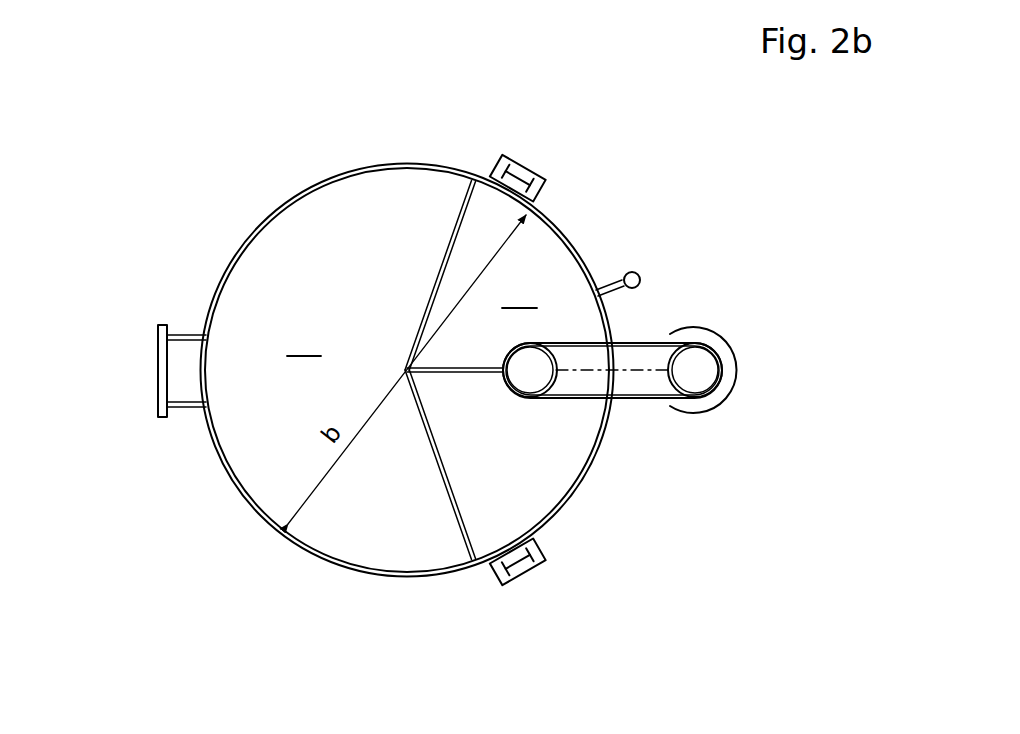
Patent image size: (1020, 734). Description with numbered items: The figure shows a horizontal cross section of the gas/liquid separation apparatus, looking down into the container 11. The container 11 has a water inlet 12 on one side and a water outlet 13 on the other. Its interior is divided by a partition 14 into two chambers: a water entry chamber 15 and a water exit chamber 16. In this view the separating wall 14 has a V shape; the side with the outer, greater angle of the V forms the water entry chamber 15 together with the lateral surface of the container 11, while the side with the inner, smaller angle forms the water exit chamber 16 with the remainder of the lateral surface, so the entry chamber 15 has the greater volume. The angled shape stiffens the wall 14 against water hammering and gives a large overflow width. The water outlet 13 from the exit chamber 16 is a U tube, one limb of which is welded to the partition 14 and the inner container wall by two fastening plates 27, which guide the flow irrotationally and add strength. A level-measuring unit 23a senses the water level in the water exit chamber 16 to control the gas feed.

The container 11 is at (315, 188).
The water inlet 12 is at (162, 372).
The water outlet 13 is at (700, 370).
The partition 14 is at (425, 371).
The water entry chamber 15 is at (304, 340).
The water exit chamber 16 is at (519, 292).
The level-measuring unit 23a is at (637, 273).
The fastening plates 27 is at (452, 372).